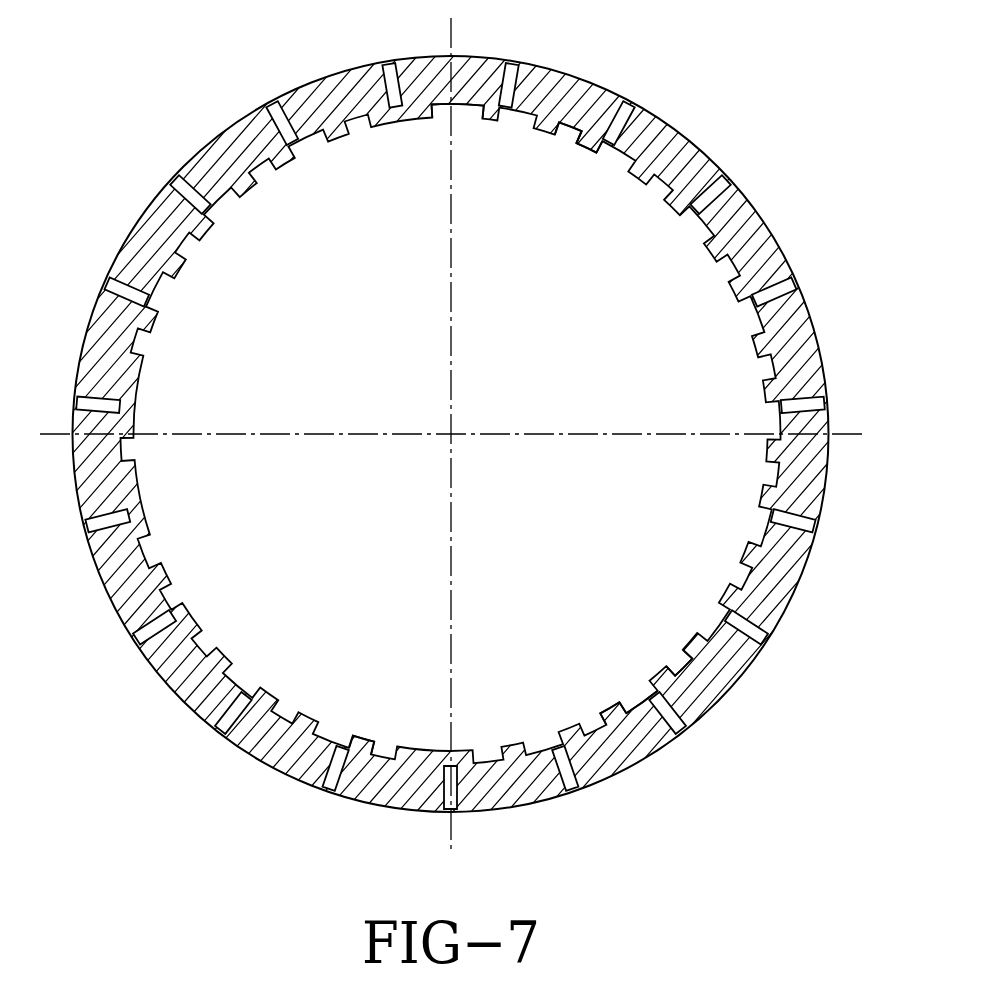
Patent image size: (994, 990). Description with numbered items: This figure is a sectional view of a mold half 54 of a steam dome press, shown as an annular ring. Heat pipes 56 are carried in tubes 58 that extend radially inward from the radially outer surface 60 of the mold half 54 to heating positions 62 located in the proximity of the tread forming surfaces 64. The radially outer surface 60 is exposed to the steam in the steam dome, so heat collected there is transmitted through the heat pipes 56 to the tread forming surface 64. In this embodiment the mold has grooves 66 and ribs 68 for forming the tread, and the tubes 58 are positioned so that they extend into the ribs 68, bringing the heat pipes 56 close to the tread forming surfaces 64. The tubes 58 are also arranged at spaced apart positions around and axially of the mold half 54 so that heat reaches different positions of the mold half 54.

The mold half 54 is at (675, 130).
The heat pipes 56 is at (225, 722).
The tubes 58 is at (397, 86).
The radially outer surface 60 is at (222, 136).
The heating positions 62 is at (597, 140).
The tread forming surfaces 64 is at (344, 737).
The grooves 66 is at (568, 128).
The ribs 68 is at (603, 148).